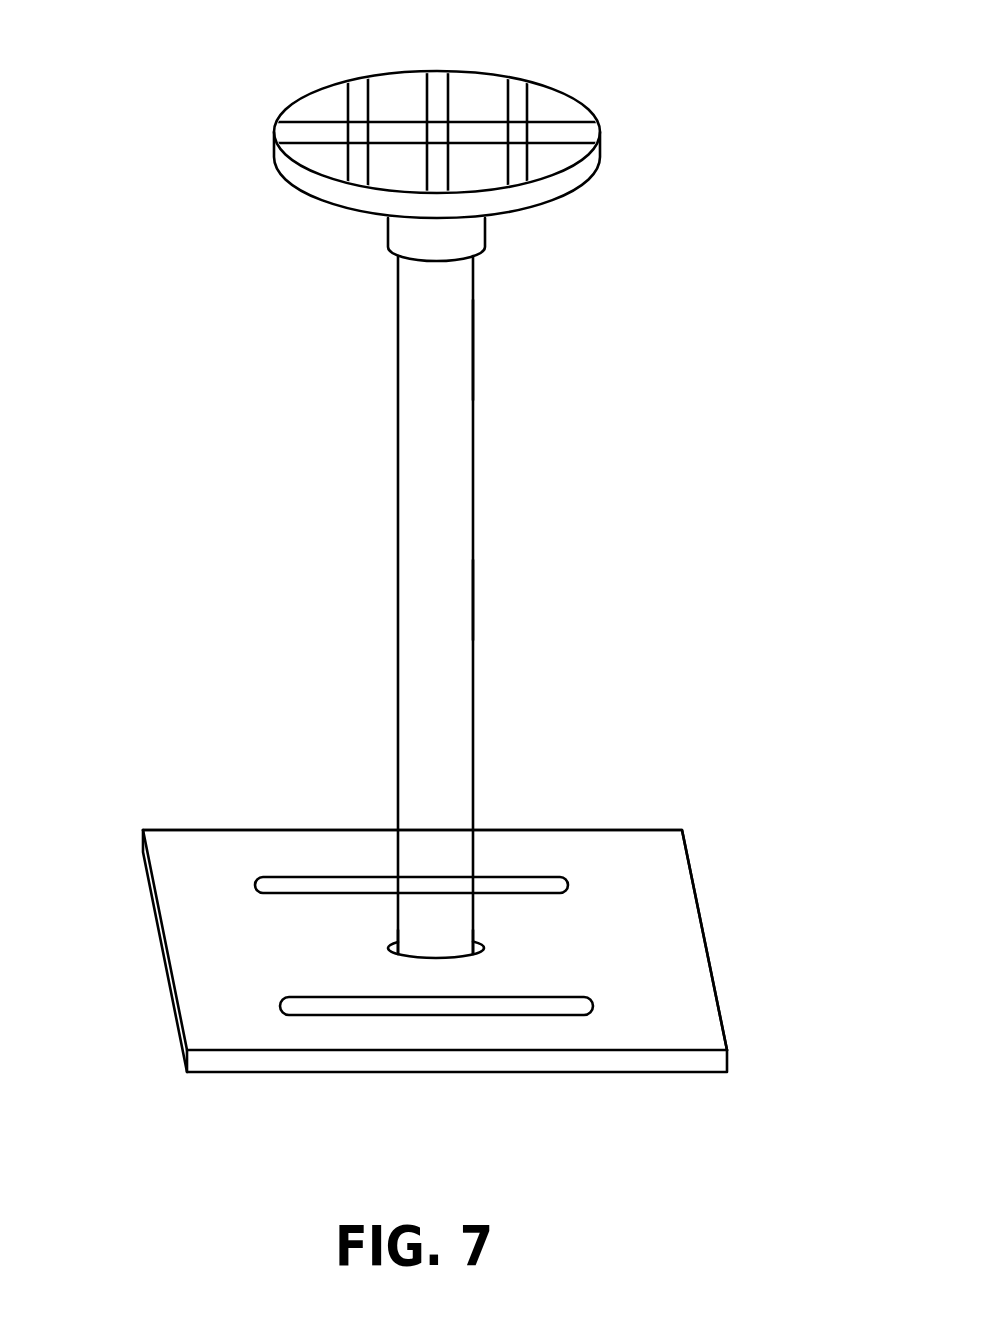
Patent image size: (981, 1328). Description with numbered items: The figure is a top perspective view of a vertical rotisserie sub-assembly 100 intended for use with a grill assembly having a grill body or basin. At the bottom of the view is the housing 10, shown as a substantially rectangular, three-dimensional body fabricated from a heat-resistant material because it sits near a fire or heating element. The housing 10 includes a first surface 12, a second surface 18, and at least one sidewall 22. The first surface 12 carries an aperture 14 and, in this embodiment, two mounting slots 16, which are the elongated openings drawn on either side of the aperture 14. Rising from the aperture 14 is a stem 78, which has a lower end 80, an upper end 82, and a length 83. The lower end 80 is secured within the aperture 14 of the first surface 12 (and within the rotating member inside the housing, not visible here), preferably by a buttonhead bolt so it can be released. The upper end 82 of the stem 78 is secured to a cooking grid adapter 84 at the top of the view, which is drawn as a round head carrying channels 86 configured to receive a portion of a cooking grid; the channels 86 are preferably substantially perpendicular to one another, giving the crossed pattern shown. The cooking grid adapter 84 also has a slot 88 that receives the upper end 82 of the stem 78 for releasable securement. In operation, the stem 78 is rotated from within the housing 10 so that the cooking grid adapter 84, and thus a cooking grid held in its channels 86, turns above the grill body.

The vertical rotisserie sub-assembly 100 is at (136, 120).
The housing 10 is at (380, 961).
The first surface 12 is at (193, 958).
The aperture 14 is at (427, 955).
The mounting slot 16 is at (267, 885).
The second surface 18 is at (177, 1013).
The sidewall 22 is at (182, 1038).
The stem 78 is at (445, 445).
The lower end 80 is at (473, 918).
The upper end 82 is at (475, 343).
The length 83 is at (475, 593).
The cooking grid adapter 84 is at (582, 178).
The channel 86 is at (582, 132).
The slot 88 is at (475, 262).